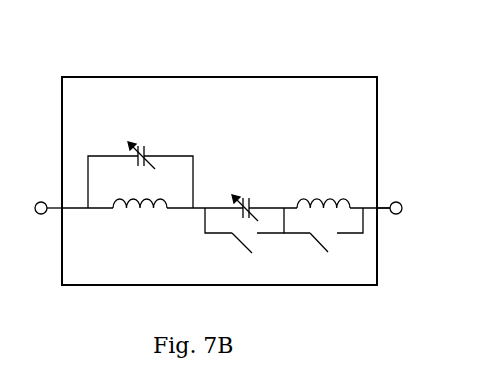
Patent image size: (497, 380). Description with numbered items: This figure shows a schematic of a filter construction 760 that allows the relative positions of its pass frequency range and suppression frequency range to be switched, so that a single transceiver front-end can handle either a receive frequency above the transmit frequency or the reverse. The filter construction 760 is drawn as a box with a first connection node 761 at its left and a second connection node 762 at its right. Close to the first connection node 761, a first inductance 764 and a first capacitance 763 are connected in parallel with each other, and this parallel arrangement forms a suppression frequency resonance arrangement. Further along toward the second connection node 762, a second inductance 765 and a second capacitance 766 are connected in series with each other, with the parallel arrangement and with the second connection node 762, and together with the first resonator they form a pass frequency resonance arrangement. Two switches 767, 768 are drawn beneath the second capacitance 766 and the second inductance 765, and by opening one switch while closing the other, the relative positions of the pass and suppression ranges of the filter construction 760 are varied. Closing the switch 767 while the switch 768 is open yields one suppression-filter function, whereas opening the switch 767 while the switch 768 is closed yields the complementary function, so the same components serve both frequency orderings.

The filter construction 760 is at (219, 181).
The first connection node 761 is at (42, 196).
The second connection node 762 is at (395, 201).
The first capacitance 763 is at (141, 146).
The first inductance 764 is at (112, 208).
The second inductance 765 is at (351, 200).
The second capacitance 766 is at (256, 200).
The switch 767 is at (312, 235).
The switch 768 is at (233, 234).